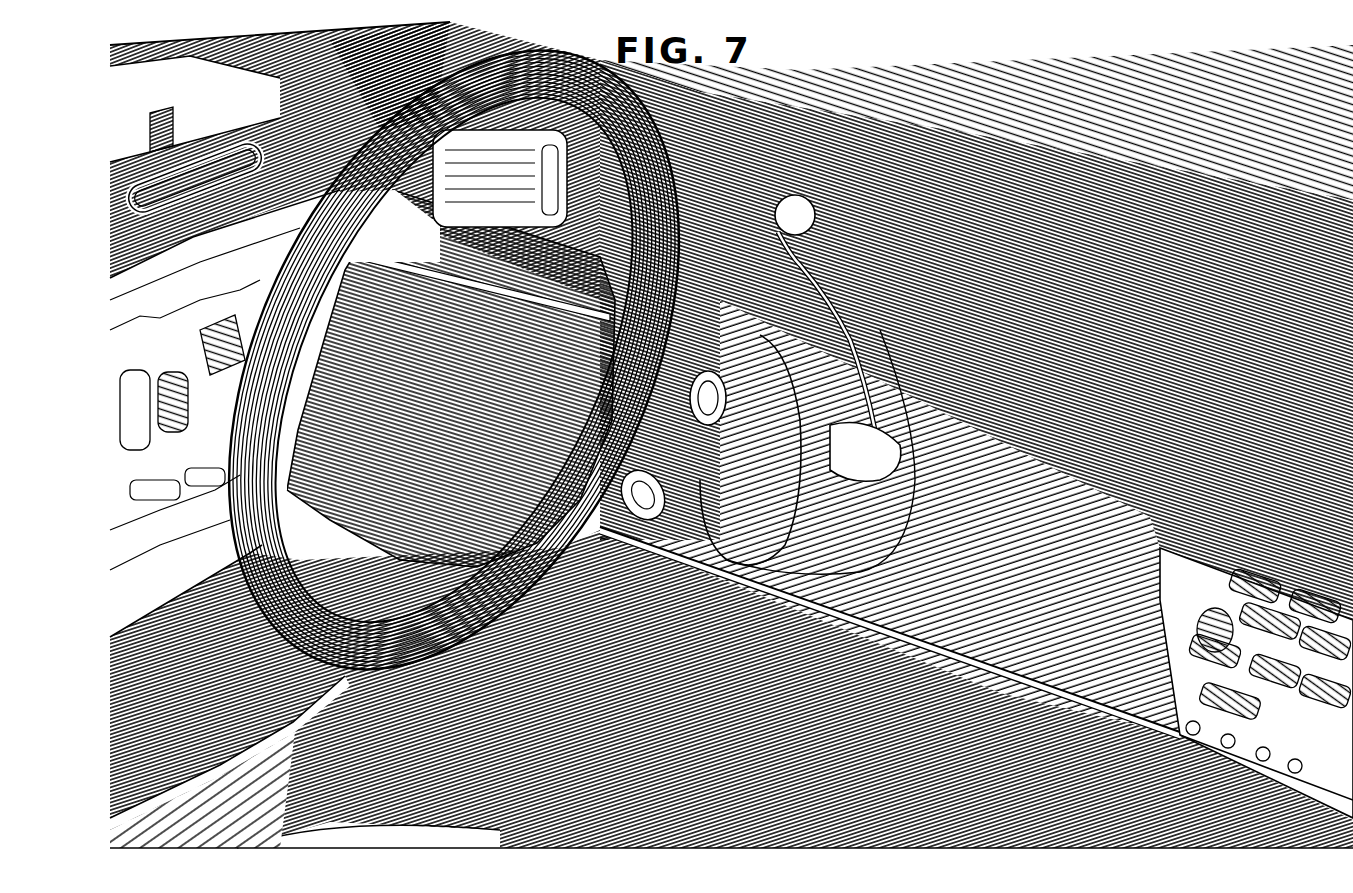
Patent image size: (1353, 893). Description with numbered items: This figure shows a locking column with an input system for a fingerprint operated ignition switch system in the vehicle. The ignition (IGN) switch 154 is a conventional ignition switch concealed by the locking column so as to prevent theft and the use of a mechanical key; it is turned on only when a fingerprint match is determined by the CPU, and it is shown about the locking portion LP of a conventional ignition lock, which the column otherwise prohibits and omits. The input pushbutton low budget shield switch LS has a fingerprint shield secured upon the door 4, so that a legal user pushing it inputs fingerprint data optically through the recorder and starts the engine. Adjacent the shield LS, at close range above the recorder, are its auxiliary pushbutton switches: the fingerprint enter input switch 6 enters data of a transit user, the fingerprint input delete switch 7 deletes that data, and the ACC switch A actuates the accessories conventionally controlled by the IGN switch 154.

The low budget shield switch LS is at (112, 135).
The fingerprint enter input switch 6 is at (180, 108).
The door 4 is at (390, 76).
The ACC switch A is at (355, 161).
The fingerprint input delete switch 7 is at (218, 178).
The locking portion LP is at (712, 428).
The ignition switch 154 is at (738, 400).